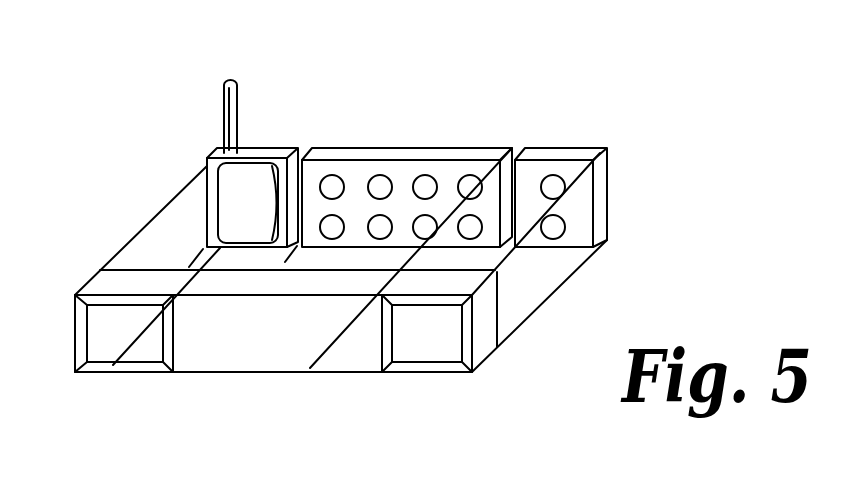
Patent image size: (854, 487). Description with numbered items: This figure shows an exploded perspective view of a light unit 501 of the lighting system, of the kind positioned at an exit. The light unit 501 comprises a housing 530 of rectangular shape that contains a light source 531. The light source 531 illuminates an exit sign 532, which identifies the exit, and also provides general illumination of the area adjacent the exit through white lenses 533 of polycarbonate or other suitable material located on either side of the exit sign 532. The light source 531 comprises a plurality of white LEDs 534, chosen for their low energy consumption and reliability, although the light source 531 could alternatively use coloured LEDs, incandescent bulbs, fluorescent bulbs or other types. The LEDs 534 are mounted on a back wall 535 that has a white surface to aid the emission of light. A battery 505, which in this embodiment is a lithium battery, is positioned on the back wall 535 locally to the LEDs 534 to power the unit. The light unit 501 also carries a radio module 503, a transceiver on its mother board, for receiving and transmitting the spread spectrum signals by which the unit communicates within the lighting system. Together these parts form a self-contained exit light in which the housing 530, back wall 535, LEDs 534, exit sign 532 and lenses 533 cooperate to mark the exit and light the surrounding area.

The light unit 501 is at (680, 107).
The radio module 503 is at (227, 93).
The battery 505 is at (228, 204).
The housing 530 is at (487, 340).
The light source 531 is at (345, 142).
The exit sign 532 is at (272, 358).
The white lenses 533 is at (130, 357).
The white LEDs 534 is at (548, 178).
The back wall 535 is at (563, 148).